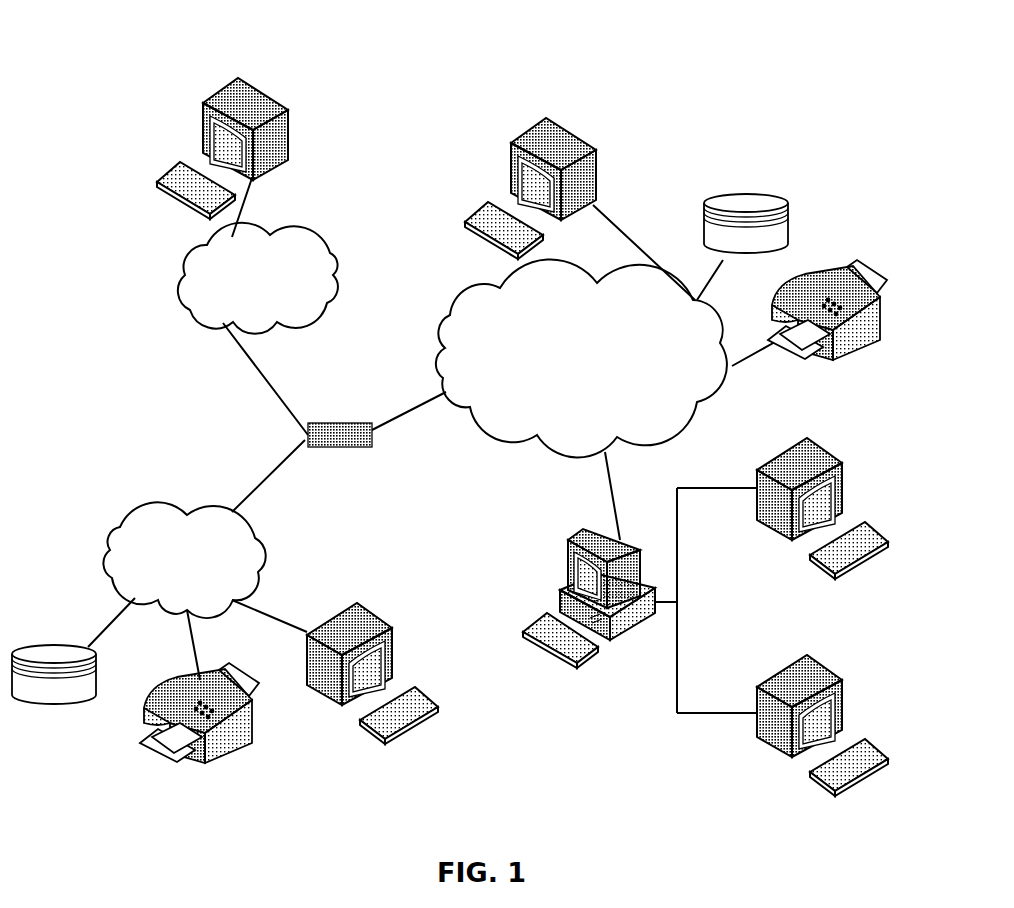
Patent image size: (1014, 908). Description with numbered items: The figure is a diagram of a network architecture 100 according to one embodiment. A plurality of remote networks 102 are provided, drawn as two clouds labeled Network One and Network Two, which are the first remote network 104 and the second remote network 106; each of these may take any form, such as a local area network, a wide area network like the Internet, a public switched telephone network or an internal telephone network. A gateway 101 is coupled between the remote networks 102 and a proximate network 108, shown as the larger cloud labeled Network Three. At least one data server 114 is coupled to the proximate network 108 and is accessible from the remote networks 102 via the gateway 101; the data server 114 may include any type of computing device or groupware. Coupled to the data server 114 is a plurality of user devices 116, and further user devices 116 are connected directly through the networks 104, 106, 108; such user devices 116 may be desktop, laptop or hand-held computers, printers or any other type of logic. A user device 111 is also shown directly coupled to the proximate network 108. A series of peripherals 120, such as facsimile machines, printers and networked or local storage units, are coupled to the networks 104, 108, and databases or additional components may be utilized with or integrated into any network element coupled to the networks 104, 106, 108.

The architecture 100 is at (129, 57).
The gateway 101 is at (325, 421).
The remote networks 102 is at (152, 350).
The first remote network 104 is at (110, 530).
The second remote network 106 is at (331, 252).
The proximate network 108 is at (693, 428).
The user device 111 is at (600, 151).
The data server 114 is at (568, 553).
The user devices 116 is at (289, 119).
The peripheral 120 is at (788, 203).